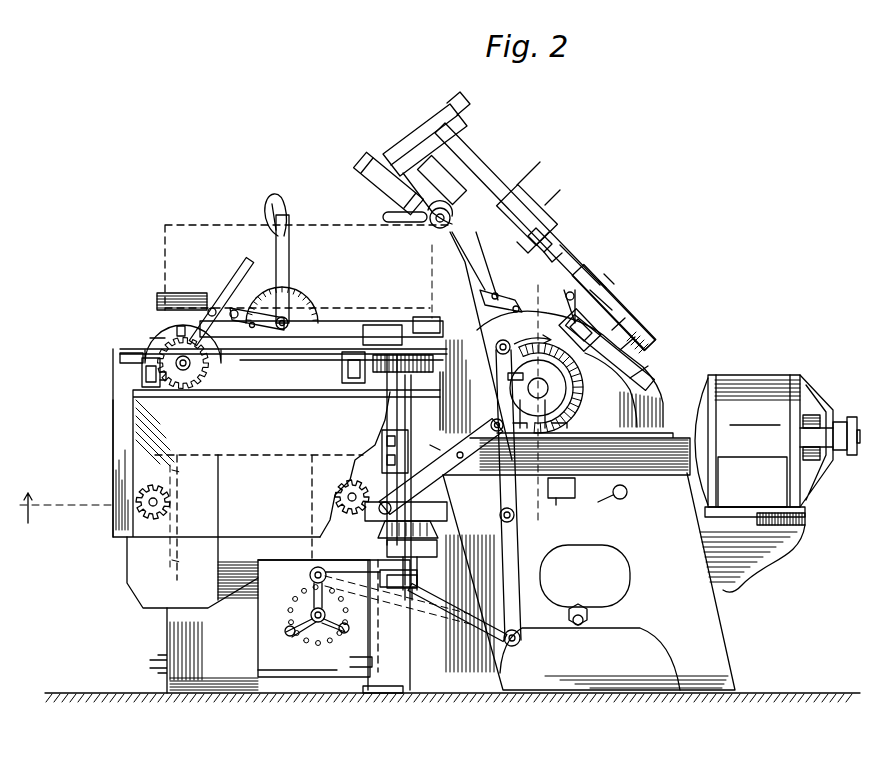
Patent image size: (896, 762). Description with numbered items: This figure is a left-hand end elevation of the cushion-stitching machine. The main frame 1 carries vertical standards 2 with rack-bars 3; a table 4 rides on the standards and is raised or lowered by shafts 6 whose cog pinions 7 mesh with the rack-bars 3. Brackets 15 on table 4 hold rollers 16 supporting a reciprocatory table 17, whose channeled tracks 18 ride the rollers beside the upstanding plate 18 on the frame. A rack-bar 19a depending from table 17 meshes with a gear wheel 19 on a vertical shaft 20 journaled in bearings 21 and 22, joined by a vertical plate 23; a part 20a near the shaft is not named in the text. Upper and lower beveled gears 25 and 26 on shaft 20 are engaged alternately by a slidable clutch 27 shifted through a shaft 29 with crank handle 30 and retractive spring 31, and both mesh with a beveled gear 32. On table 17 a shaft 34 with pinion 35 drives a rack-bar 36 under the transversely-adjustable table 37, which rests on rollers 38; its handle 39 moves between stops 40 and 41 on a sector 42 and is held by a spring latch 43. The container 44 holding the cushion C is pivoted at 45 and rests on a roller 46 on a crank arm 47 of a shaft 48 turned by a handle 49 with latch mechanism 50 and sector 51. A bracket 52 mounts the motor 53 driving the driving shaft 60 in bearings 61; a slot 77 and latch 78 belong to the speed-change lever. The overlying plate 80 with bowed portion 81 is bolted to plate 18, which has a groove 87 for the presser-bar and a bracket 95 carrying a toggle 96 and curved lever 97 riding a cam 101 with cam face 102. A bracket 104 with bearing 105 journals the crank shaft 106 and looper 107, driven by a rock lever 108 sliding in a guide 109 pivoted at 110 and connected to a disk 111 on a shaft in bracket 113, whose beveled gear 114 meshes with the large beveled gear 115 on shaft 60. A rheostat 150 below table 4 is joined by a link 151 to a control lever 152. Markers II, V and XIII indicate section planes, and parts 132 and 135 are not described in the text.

The main frame 1 is at (713, 622).
The vertical standards 2 is at (165, 632).
The vertical rack-bars 3 is at (167, 548).
The table 4 is at (276, 474).
The shafts 6 is at (118, 523).
The cog pinions 7 is at (110, 477).
The brackets 15 is at (160, 378).
The rollers 16 is at (142, 366).
The reciprocatory table 17 is at (120, 350).
The upstanding plate 18 is at (342, 358).
The gear wheel 19 is at (372, 395).
The rack-bar 19a is at (437, 363).
The vertical shaft 20 is at (403, 421).
The link 20a is at (403, 582).
The bearing 21 is at (383, 446).
The bearing 22 is at (432, 561).
The vertical plate 23 is at (375, 528).
The upper beveled gear 25 is at (380, 483).
The lower beveled gear 26 is at (387, 544).
The slidable clutch 27 is at (430, 525).
The shaft 29 is at (425, 515).
The crank handle 30 is at (472, 455).
The retractive spring 31 is at (430, 446).
The beveled gear 32 is at (432, 554).
The shaft 34 is at (133, 404).
The gear pinion 35 is at (180, 383).
The transverse rack-bar 36 is at (220, 340).
The transversely-adjustable table 37 is at (332, 325).
The rollers 38 is at (380, 325).
The handle 39 is at (245, 283).
The stop 40 is at (147, 327).
The stop 41 is at (212, 382).
The sector 42 is at (152, 338).
The spring latch 43 is at (207, 303).
The cushion container 44 is at (157, 300).
The pivot 45 is at (430, 318).
The roller 46 is at (237, 307).
The crank arm 47 is at (268, 328).
The shaft 48 is at (288, 318).
The handle 49 is at (282, 215).
The latch mechanism 50 is at (275, 215).
The sector 51 is at (290, 282).
The bracket 52 is at (805, 522).
The electric motor 53 is at (810, 392).
The driving shaft 60 is at (665, 392).
The bearings 61 is at (655, 410).
The slot 77 is at (562, 500).
The spring-actuated latch 78 is at (618, 499).
The overlying plate 80 is at (383, 217).
The bowed portion 81 is at (455, 202).
The horizontal groove 87 is at (528, 196).
The bracket 95 is at (572, 240).
The toggle 96 is at (585, 262).
The curved lever 97 is at (595, 268).
The cam 101 is at (590, 310).
The cam face 102 is at (578, 318).
The bracket 104 is at (470, 150).
The bearing 105 is at (413, 143).
The crank shaft 106 is at (385, 160).
The looper 107 is at (362, 158).
The rock lever 108 is at (487, 165).
The guide 109 is at (540, 213).
The pivot 110 is at (545, 237).
The disk 111 is at (652, 358).
The bracket 113 is at (642, 374).
The beveled gear 114 is at (617, 336).
The large beveled gear 115 is at (652, 336).
The fitting 132 is at (600, 280).
The fitting 135 is at (600, 284).
The rheostat 150 is at (258, 646).
The link 151 is at (311, 580).
The control lever 152 is at (520, 646).
The cushion C is at (167, 238).
The section line II is at (59, 508).
The section line V is at (540, 401).
The section line XIII is at (432, 250).